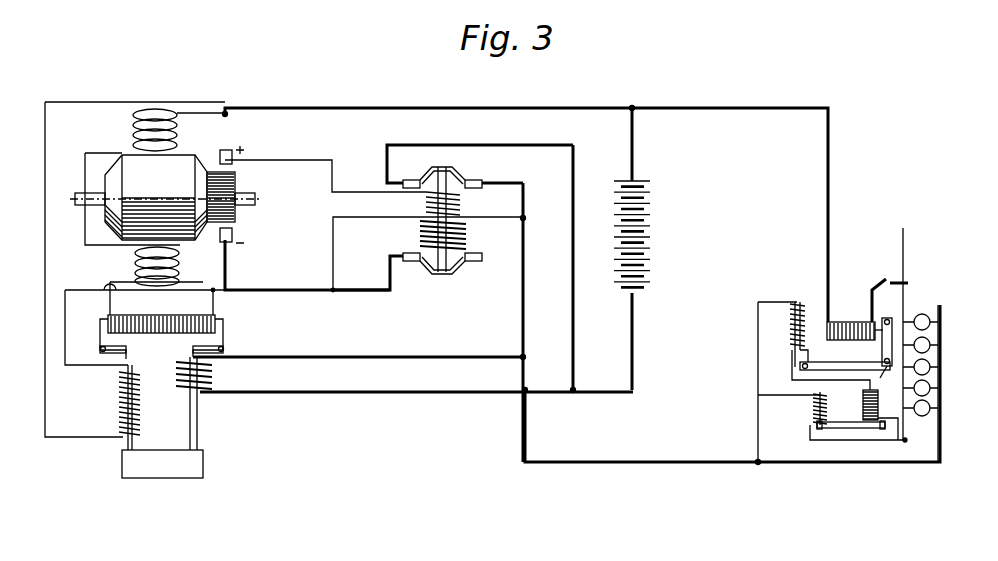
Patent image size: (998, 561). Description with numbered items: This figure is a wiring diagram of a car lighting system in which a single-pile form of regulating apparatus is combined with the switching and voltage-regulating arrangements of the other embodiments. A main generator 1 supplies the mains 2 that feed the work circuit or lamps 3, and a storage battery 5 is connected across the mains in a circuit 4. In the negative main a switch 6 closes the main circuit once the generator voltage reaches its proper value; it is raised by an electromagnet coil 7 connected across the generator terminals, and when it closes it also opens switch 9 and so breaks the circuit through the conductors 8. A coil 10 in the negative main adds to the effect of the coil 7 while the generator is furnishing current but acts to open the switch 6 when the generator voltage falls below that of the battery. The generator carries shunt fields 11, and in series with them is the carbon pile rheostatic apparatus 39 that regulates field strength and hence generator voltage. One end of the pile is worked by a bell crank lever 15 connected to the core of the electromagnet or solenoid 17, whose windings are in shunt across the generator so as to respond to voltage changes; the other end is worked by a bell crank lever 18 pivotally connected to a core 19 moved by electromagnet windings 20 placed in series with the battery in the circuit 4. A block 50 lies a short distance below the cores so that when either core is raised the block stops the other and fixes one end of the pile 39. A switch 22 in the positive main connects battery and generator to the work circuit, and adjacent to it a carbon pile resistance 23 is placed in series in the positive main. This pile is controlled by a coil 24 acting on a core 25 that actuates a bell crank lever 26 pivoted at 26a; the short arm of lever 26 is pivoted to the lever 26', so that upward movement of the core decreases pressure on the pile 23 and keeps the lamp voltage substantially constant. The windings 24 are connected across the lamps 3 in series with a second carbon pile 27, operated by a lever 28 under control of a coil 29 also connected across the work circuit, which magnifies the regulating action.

The main generator 1 is at (135, 162).
The mains 2 is at (400, 105).
The lamps 3 is at (925, 328).
The circuit 4 is at (634, 142).
The storage battery 5 is at (653, 236).
The switch 6 is at (445, 276).
The electromagnet coil 7 is at (462, 202).
The conductors 8 is at (520, 145).
The switch 9 is at (455, 168).
The coil 10 is at (422, 238).
The shunt fields 11 is at (158, 112).
The bell crank lever 15 is at (100, 334).
The electromagnet or solenoid 17 is at (120, 396).
The bell crank lever 18 is at (223, 336).
The core 19 is at (199, 428).
The electromagnet windings 20 is at (214, 376).
The switch 22 is at (883, 276).
The carbon pile resistance 23 is at (845, 322).
The coil 24 is at (792, 334).
The core 25 is at (808, 354).
The bell crank lever 26 is at (845, 355).
The lever 26' is at (919, 317).
The pivot 26a is at (892, 381).
The second carbon pile 27 is at (862, 402).
The lever 28 is at (852, 430).
The coil 29 is at (813, 406).
The carbon pile resistance 39 is at (153, 320).
The block 50 is at (168, 468).